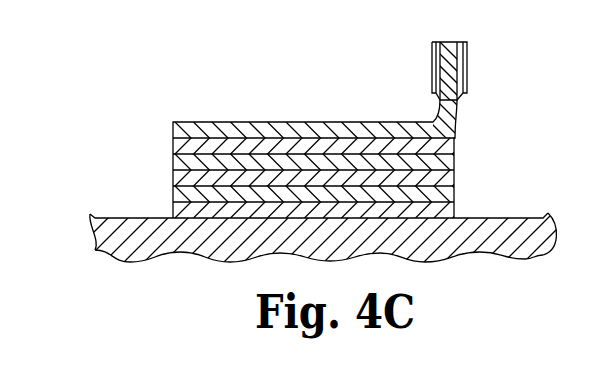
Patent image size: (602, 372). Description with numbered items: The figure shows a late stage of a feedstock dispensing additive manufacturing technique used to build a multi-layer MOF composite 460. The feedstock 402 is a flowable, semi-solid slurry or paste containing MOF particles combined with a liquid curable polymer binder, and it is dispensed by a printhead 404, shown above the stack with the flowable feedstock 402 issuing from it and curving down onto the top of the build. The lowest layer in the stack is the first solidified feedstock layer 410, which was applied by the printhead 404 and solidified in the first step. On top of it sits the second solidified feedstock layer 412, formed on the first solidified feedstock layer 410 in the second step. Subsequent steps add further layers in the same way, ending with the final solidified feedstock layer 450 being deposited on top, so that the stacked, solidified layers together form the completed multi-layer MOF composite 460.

The multi-layer MOF composite 460 is at (128, 44).
The final solidified feedstock layer 450 is at (187, 121).
The second solidified feedstock layer 412 is at (455, 188).
The first solidified feedstock layer 410 is at (455, 211).
The feedstock 402 is at (450, 53).
The printhead 404 is at (467, 80).